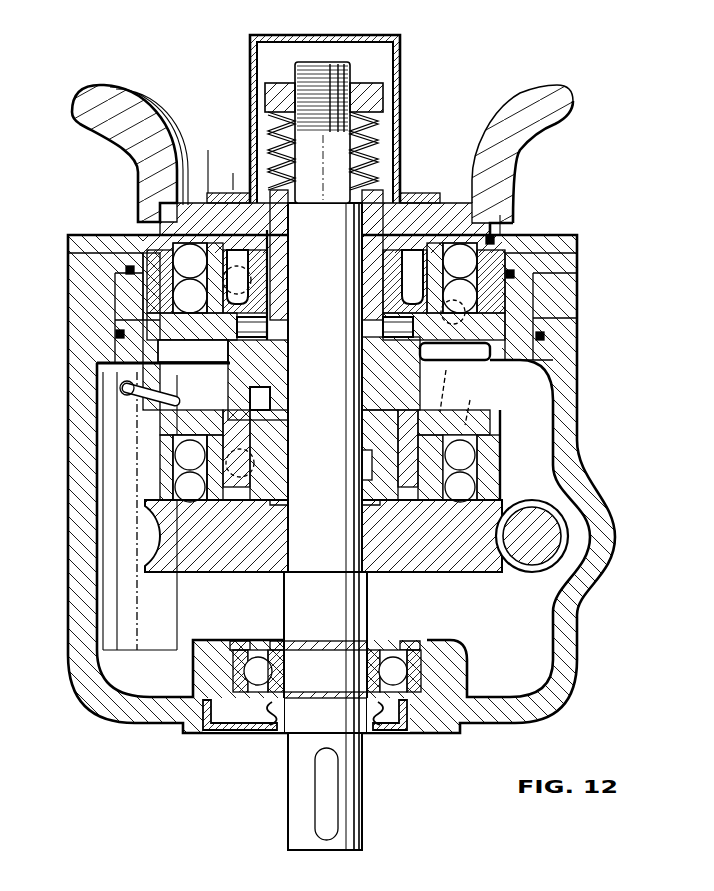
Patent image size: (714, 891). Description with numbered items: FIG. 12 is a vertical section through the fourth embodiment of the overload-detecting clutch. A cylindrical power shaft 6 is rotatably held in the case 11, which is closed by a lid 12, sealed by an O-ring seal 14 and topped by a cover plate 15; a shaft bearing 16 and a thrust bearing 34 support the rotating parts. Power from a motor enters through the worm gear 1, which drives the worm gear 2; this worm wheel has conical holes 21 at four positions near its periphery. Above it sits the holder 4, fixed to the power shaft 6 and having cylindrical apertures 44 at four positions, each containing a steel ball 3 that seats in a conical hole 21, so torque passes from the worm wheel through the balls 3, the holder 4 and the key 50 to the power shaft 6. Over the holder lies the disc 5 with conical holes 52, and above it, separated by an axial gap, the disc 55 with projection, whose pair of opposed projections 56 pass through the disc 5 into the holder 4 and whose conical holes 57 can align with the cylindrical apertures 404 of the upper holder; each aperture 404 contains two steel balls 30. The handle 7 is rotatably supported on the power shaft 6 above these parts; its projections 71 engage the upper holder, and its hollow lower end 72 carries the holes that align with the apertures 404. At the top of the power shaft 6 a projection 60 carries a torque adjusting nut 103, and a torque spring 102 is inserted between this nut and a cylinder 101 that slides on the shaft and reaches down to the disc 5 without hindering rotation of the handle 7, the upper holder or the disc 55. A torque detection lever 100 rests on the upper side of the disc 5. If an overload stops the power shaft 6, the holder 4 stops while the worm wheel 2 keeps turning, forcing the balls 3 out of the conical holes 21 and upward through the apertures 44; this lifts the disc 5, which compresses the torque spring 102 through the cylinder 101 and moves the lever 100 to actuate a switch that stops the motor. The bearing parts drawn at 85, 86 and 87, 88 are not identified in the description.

The worm gear 1 is at (527, 548).
The worm gear 2 is at (462, 558).
The steel balls 3 is at (500, 487).
The holder 4 is at (495, 462).
The cylindrical apertures 44 is at (485, 440).
The disc 5 is at (490, 420).
The power shaft 6 is at (350, 790).
The handle 7 is at (520, 125).
The case 11 is at (568, 358).
The lid 12 is at (580, 237).
The O-ring seal 14 is at (413, 670).
The cover plate 15 is at (400, 40).
The shaft bearing 16 is at (578, 263).
The conical holes 21 is at (452, 512).
The steel balls 30 is at (547, 283).
The thrust bearing 34 is at (279, 352).
The key 50 is at (362, 465).
The conical holes 52 is at (437, 436).
The disc with projection 55 is at (477, 327).
The projections 56 is at (275, 520).
The conical holes 57 is at (435, 391).
The projection 60 is at (325, 73).
The projections 71 is at (279, 232).
The hollow lower end 72 is at (495, 186).
The lower bearing 85 is at (262, 462).
The lower bearing 86 is at (251, 467).
The upper bearing 87 is at (267, 285).
The upper bearing 88 is at (325, 278).
The torque detection lever 100 is at (164, 393).
The cylinder 101 is at (370, 347).
The torque spring 102 is at (372, 140).
The torque adjusting nut 103 is at (280, 92).
The cylindrical apertures 404 is at (540, 315).